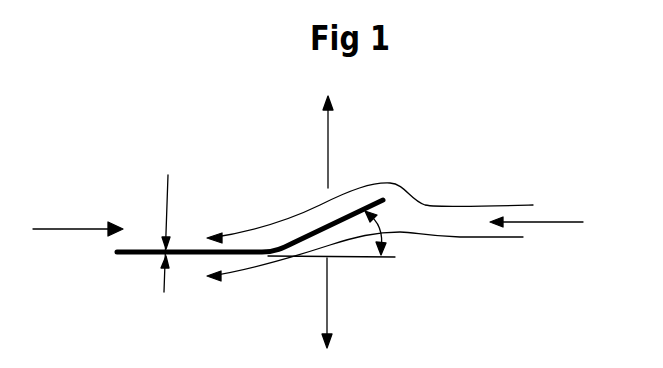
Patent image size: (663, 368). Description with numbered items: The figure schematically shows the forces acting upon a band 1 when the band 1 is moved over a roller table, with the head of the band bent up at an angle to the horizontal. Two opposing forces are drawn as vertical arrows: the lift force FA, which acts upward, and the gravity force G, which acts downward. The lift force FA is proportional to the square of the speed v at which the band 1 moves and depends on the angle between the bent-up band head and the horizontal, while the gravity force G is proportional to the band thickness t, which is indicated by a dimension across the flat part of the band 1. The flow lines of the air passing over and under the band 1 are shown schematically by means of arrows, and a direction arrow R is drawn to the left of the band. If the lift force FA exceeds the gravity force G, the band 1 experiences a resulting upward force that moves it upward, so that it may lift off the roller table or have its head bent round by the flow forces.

The band 1 is at (127, 256).
The speed v is at (526, 222).
The lift force FA is at (328, 137).
The gravity force G is at (327, 298).
The band thickness t is at (153, 233).
The flow direction R is at (40, 229).